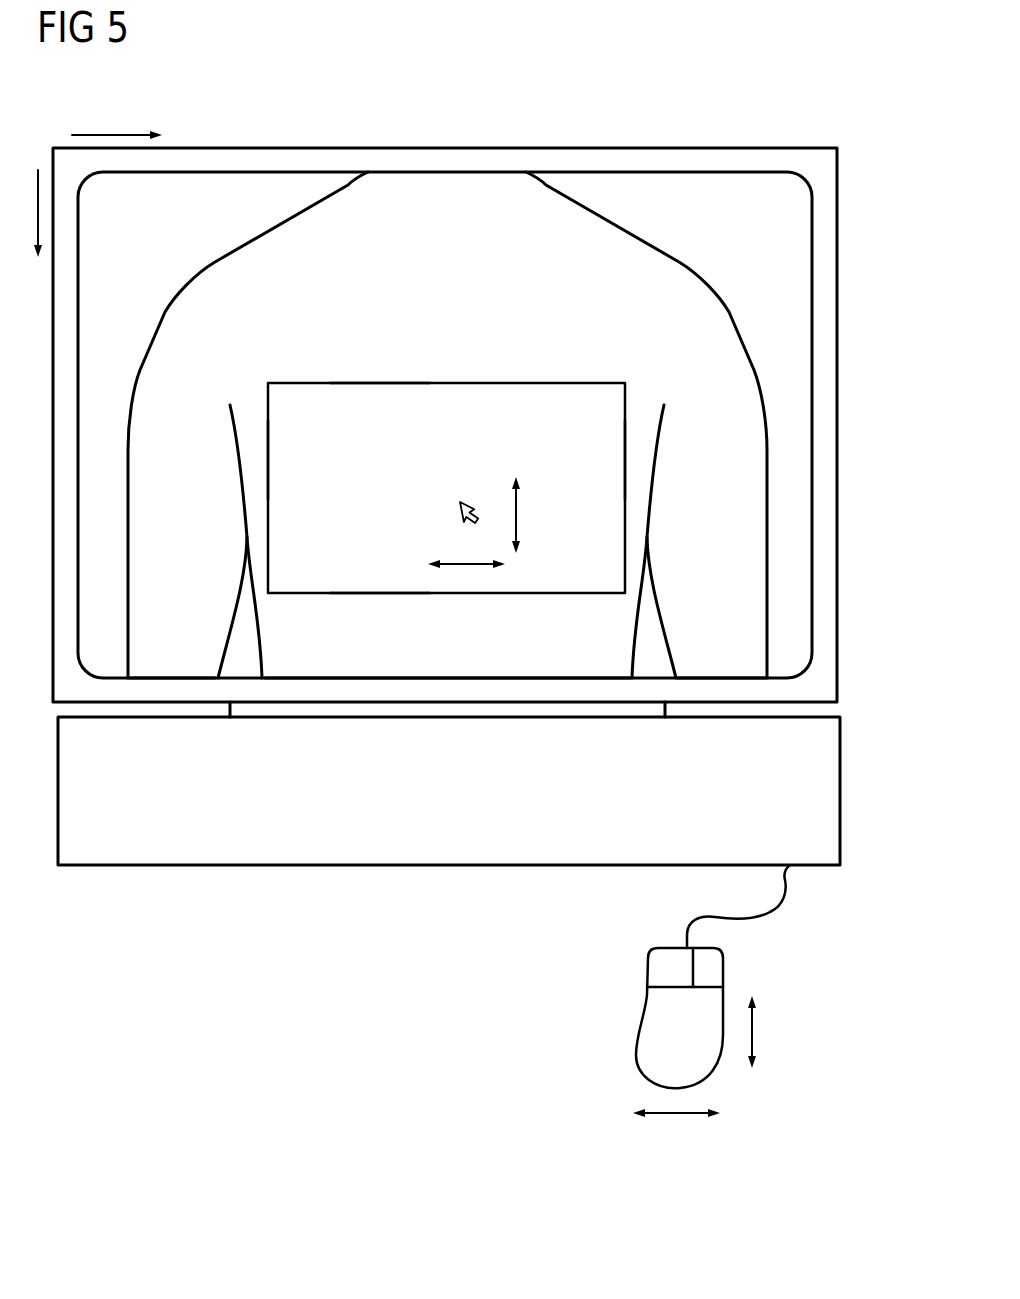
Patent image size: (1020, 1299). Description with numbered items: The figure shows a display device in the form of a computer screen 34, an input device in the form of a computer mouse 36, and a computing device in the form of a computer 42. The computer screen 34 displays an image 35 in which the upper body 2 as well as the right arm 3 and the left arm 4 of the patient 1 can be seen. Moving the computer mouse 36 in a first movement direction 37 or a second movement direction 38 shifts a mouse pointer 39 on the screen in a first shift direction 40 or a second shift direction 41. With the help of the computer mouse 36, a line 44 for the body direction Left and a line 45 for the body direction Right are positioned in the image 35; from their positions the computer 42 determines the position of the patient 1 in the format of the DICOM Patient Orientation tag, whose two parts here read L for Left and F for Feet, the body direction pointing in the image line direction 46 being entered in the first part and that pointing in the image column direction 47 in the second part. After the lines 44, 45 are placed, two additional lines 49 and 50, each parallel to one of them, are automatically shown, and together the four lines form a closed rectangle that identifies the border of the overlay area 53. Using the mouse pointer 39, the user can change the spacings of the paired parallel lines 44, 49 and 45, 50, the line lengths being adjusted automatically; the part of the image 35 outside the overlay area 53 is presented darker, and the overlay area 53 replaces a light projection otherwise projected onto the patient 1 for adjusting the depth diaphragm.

The patient 1 is at (203, 262).
The upper body 2 is at (434, 665).
The right arm 3 is at (167, 665).
The left arm 4 is at (718, 665).
The computer screen 34 is at (705, 125).
The image 35 is at (615, 185).
The computer mouse 36 is at (655, 1017).
The first movement direction 37 is at (676, 1115).
The second movement direction 38 is at (755, 1032).
The mouse pointer 39 is at (475, 503).
The first shift direction 40 is at (455, 563).
The second shift direction 41 is at (523, 510).
The computer 42 is at (403, 853).
The line for the body direction Left 44 is at (625, 463).
The line for the body direction Right 45 is at (378, 383).
The image line direction 46 is at (108, 135).
The image column direction 47 is at (38, 211).
The additional line 49 is at (268, 463).
The additional line 50 is at (378, 593).
The overlay area 53 is at (322, 397).